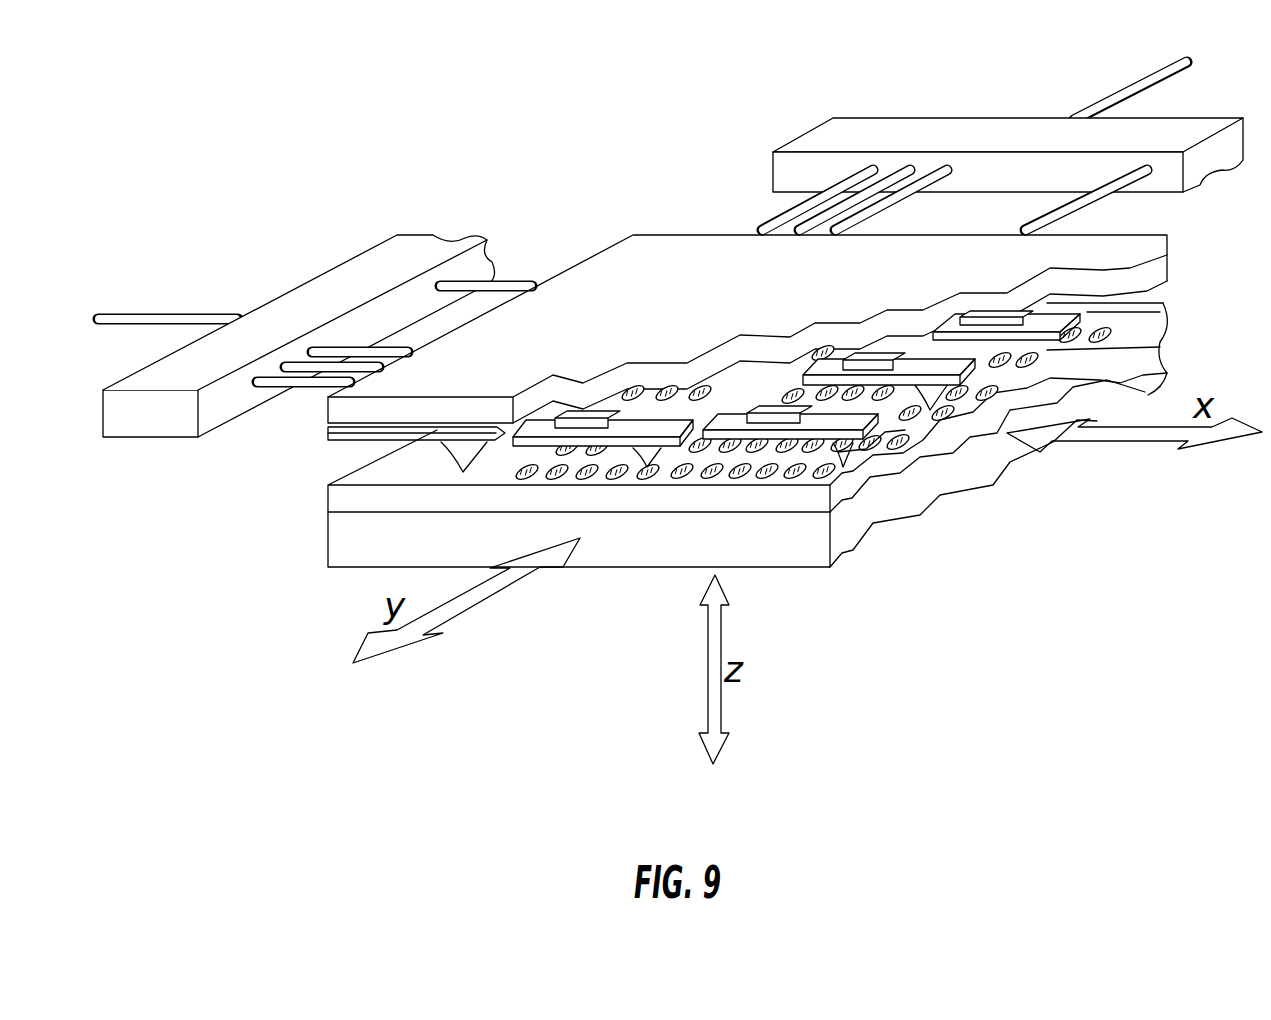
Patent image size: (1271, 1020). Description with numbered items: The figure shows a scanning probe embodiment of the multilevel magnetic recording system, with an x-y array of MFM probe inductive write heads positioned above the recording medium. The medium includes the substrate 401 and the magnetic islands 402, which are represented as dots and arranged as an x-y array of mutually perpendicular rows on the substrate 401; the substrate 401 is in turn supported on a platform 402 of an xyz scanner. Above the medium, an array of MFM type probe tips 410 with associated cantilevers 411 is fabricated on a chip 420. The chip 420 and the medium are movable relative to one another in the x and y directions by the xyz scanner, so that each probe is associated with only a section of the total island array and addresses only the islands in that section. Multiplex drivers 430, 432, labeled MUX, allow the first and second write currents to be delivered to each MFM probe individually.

The substrate 401 is at (332, 500).
The magnetic islands 402 is at (330, 546).
The MFM type probe tips 410 is at (647, 445).
The cantilevers 411 is at (650, 422).
The chip 420 is at (613, 253).
The multiplex driver 430 is at (347, 267).
The multiplex driver 432 is at (1180, 122).